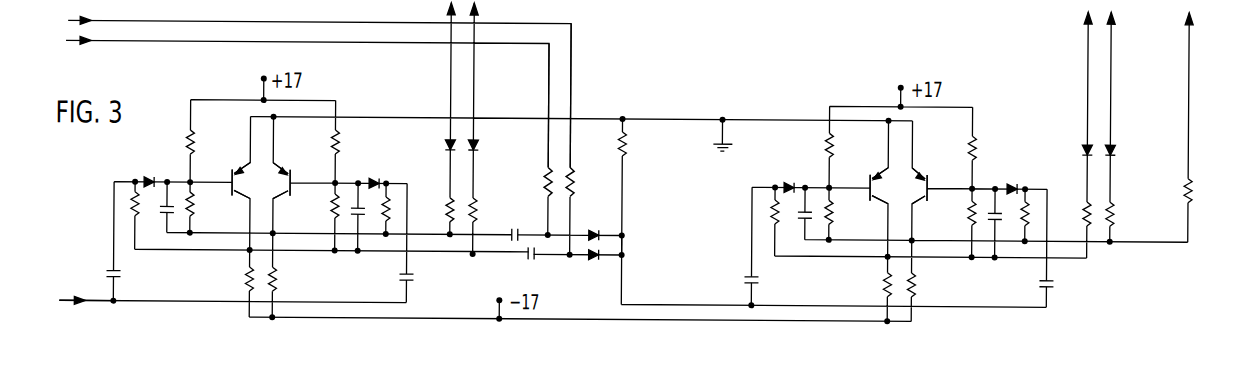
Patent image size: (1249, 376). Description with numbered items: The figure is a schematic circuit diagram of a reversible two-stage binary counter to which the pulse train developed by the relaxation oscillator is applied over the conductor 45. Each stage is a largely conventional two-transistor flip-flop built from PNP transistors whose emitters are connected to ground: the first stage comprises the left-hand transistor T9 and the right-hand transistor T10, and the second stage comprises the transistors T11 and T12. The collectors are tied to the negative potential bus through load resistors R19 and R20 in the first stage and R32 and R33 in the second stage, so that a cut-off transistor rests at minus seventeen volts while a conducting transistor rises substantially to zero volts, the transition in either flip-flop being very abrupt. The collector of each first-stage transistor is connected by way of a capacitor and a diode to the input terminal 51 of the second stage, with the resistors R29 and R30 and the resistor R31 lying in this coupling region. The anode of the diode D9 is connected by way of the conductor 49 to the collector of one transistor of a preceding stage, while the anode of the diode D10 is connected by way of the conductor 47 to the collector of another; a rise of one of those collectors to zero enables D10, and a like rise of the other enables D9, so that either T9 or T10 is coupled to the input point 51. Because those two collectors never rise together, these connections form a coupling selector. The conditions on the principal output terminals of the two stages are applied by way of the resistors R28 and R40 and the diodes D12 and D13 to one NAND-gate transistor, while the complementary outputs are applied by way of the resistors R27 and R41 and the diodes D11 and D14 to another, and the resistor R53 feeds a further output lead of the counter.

The left-hand transistor T9 is at (236, 174).
The right-hand transistor T10 is at (292, 174).
The transistor T11 is at (873, 179).
The transistor T12 is at (929, 179).
The load resistor R19 is at (230, 279).
The load resistor R20 is at (289, 279).
The resistor R27 is at (438, 205).
The resistor R28 is at (484, 205).
The resistor R29 is at (535, 181).
The resistor R30 is at (584, 181).
The resistor R31 is at (641, 143).
The load resistor R32 is at (866, 285).
The load resistor R33 is at (932, 285).
The resistor R40 is at (1073, 220).
The resistor R41 is at (1121, 220).
The resistor R53 is at (1208, 190).
The diode D9 is at (595, 227).
The diode D10 is at (598, 267).
The diode D11 is at (433, 145).
The diode D12 is at (489, 145).
The diode D13 is at (1070, 155).
The diode D14 is at (1130, 155).
The conductor 45 is at (100, 308).
The conductor 47 is at (571, 70).
The conductor 49 is at (550, 86).
The input terminal 51 is at (624, 247).